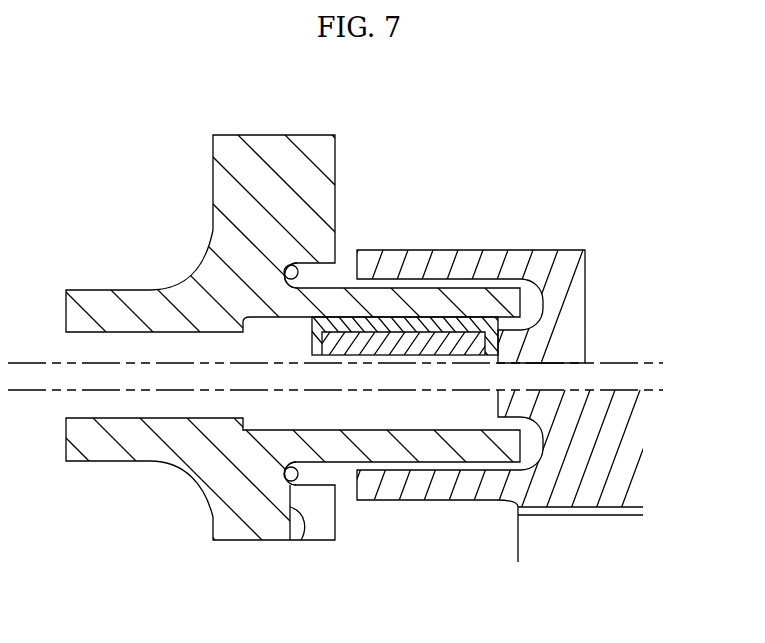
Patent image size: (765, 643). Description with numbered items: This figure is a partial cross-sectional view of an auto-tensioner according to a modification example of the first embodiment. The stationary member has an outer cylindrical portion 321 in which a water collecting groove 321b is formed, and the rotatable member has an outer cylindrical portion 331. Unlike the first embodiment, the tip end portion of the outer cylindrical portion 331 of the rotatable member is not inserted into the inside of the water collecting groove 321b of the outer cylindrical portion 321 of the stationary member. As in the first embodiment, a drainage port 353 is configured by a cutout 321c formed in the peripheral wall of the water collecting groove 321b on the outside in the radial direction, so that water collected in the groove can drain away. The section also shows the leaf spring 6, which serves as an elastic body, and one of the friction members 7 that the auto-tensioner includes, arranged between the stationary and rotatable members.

The outer cylindrical portion 321 is at (103, 303).
The water collecting groove 321b is at (287, 271).
The cutout 321c is at (303, 533).
The drainage port 353 is at (315, 500).
The outer cylindrical portion 331 is at (408, 263).
The leaf spring 6 is at (460, 342).
The friction member 7 is at (437, 322).